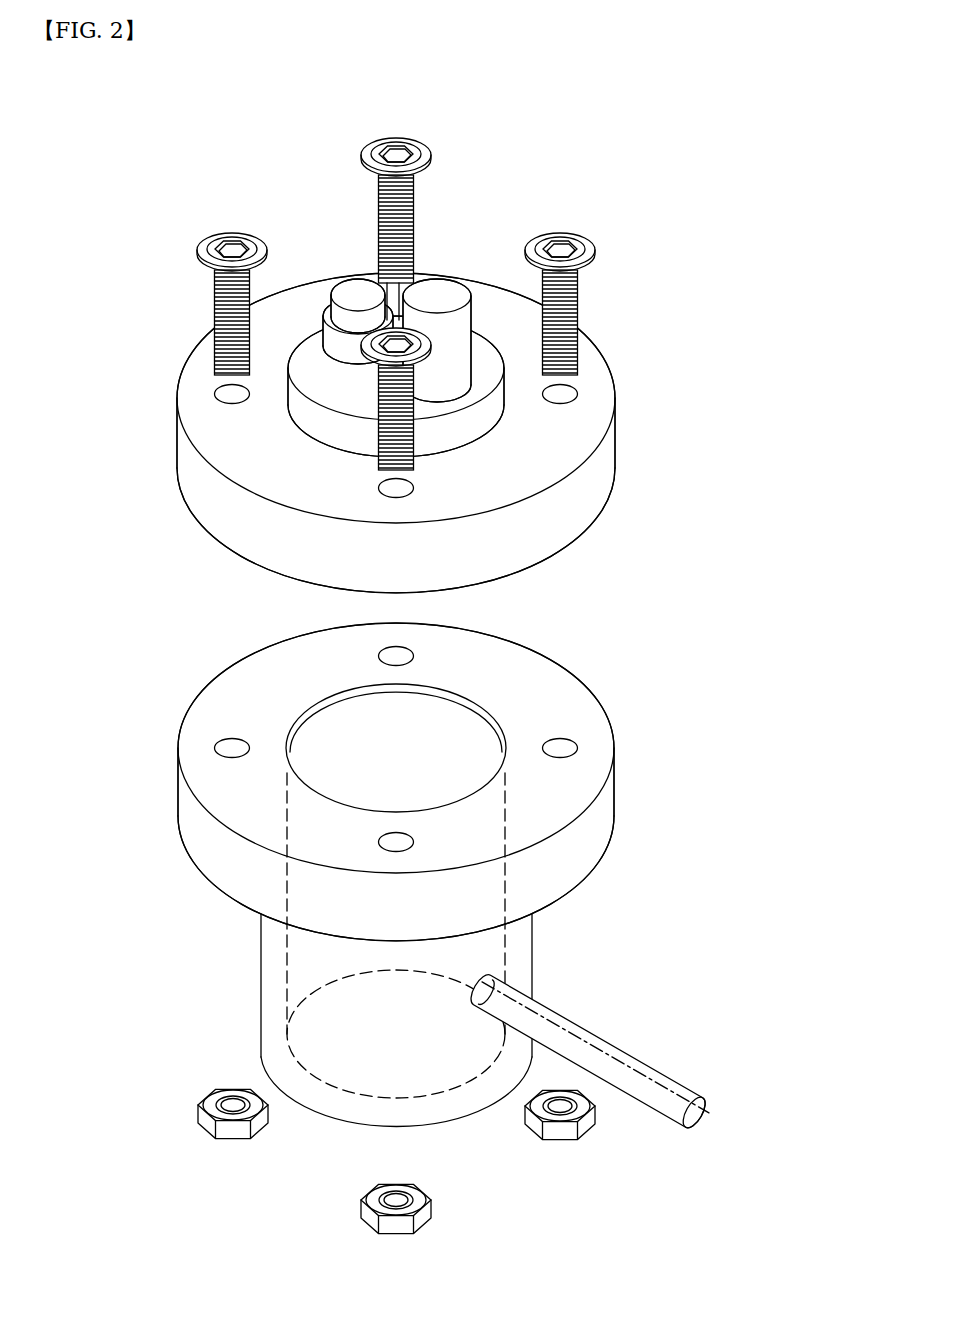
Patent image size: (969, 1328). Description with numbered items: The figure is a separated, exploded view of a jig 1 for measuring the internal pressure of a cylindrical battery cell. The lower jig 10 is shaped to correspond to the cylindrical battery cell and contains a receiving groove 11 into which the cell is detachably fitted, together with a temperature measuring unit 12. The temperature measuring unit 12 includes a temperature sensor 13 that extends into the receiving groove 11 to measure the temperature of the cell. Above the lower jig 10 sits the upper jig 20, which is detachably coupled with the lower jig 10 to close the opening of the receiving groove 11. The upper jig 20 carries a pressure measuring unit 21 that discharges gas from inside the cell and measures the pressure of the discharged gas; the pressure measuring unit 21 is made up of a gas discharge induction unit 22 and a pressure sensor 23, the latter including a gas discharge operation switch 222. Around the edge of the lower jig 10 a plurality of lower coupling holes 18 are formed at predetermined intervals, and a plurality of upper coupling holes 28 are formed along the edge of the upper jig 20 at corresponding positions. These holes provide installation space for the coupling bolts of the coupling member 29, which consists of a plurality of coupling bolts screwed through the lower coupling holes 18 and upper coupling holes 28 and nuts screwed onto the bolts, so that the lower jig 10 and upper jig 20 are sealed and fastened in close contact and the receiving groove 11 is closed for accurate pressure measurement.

The jig 1 is at (120, 170).
The lower jig 10 is at (456, 874).
The receiving groove 11 is at (448, 704).
The temperature measuring unit 12 is at (620, 1001).
The temperature sensor 13 is at (597, 1048).
The lower coupling hole 18 is at (562, 750).
The upper jig 20 is at (425, 433).
The pressure measuring unit 21 is at (497, 403).
The gas discharge induction unit 22 is at (279, 396).
The gas discharge operation switch 222 is at (356, 298).
The pressure sensor 23 is at (437, 284).
The upper coupling hole 28 is at (222, 393).
The coupling member 29 is at (563, 250).